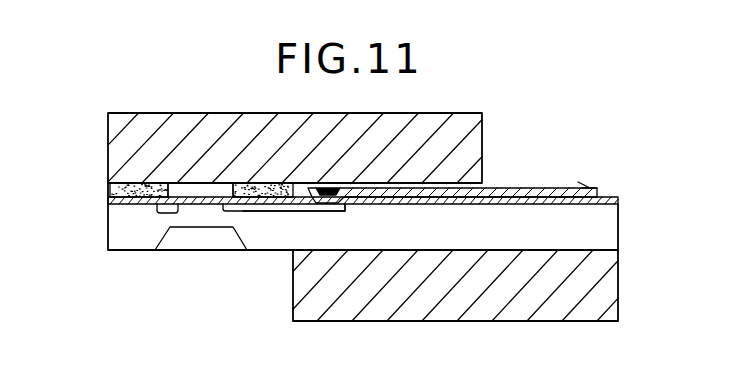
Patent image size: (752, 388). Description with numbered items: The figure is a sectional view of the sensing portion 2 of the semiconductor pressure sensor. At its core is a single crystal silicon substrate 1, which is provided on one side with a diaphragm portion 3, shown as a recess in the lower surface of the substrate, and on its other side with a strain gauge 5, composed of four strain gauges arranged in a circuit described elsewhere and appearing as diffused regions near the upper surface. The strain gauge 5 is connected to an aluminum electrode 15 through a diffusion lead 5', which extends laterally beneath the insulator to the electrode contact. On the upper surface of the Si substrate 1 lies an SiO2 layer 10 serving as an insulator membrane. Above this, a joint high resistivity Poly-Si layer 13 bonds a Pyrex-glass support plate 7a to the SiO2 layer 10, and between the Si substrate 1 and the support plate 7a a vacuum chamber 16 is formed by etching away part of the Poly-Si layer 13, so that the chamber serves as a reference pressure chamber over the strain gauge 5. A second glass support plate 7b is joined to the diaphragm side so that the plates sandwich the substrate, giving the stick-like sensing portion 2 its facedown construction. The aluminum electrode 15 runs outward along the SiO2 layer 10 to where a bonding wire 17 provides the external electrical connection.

The single crystal silicon substrate 1 is at (612, 238).
The sensing portion 2 is at (137, 86).
The diaphragm portion 3 is at (189, 240).
The strain gauge 5 is at (234, 259).
The diffusion lead 5' is at (294, 246).
The support plate 7a is at (203, 130).
The support plate 7b is at (293, 302).
The SiO2 layer 10 is at (113, 202).
The high resistivity Poly-Si layer 13 is at (115, 190).
The aluminum electrode 15 is at (526, 190).
The vacuum chamber 16 is at (230, 188).
The bonding wire 17 is at (590, 186).